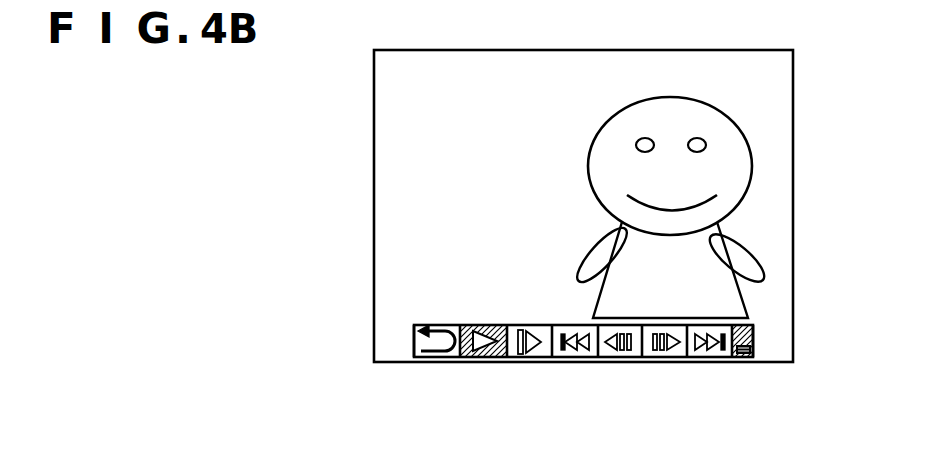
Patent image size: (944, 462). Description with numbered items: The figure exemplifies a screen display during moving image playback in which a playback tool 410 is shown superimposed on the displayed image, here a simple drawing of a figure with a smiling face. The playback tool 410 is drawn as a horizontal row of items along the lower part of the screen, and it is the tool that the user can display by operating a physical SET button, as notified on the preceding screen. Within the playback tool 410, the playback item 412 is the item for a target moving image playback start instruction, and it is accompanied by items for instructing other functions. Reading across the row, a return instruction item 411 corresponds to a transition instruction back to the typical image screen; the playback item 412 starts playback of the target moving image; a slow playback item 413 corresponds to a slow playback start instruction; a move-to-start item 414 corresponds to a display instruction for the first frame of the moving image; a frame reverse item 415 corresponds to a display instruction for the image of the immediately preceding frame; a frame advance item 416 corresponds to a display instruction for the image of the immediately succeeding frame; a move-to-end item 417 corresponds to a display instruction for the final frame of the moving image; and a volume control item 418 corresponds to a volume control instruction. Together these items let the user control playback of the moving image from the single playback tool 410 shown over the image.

The playback tool 410 is at (667, 328).
The return instruction item 411 is at (440, 357).
The playback item 412 is at (485, 357).
The slow playback item 413 is at (530, 357).
The move-to-start item 414 is at (575, 357).
The frame reverse item 415 is at (622, 357).
The frame advance item 416 is at (665, 357).
The move-to-end item 417 is at (710, 357).
The volume control item 418 is at (747, 357).